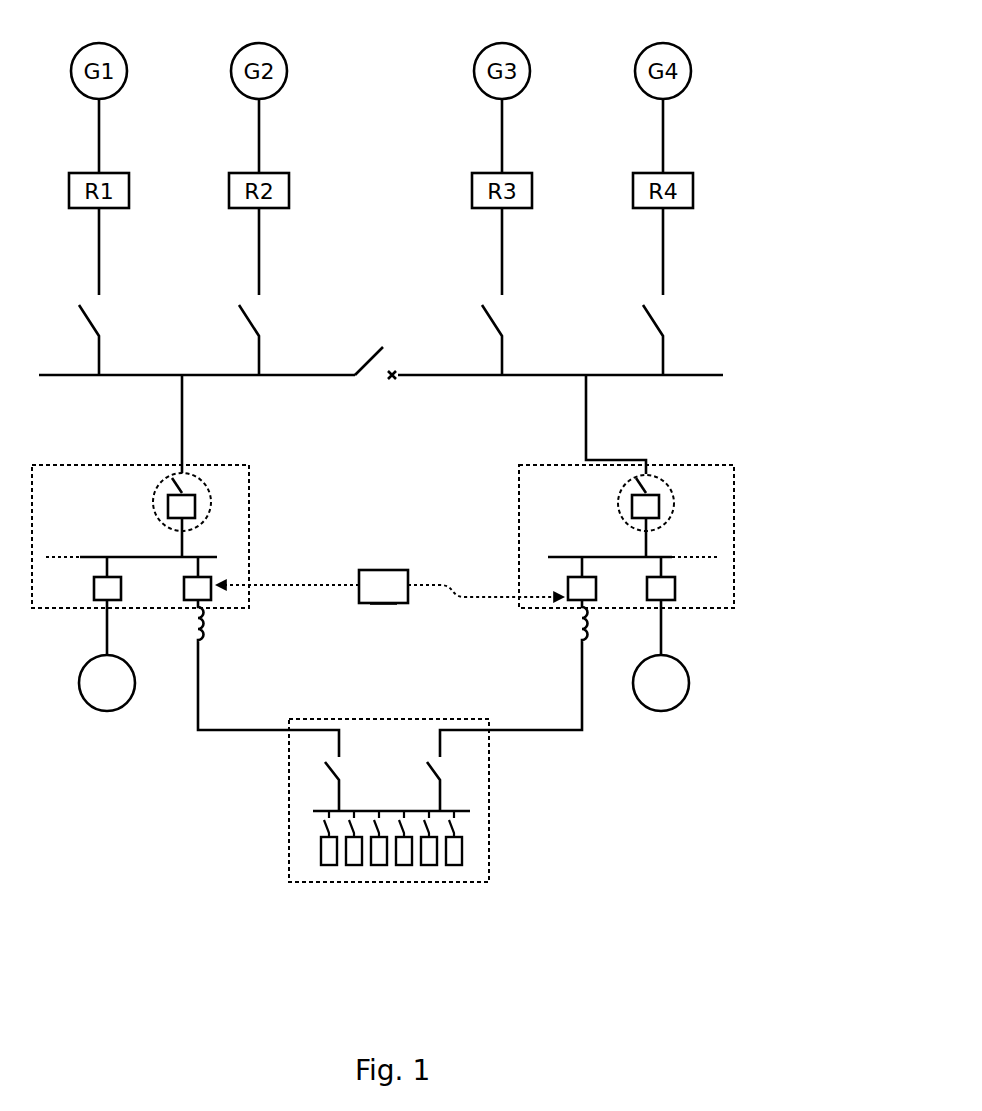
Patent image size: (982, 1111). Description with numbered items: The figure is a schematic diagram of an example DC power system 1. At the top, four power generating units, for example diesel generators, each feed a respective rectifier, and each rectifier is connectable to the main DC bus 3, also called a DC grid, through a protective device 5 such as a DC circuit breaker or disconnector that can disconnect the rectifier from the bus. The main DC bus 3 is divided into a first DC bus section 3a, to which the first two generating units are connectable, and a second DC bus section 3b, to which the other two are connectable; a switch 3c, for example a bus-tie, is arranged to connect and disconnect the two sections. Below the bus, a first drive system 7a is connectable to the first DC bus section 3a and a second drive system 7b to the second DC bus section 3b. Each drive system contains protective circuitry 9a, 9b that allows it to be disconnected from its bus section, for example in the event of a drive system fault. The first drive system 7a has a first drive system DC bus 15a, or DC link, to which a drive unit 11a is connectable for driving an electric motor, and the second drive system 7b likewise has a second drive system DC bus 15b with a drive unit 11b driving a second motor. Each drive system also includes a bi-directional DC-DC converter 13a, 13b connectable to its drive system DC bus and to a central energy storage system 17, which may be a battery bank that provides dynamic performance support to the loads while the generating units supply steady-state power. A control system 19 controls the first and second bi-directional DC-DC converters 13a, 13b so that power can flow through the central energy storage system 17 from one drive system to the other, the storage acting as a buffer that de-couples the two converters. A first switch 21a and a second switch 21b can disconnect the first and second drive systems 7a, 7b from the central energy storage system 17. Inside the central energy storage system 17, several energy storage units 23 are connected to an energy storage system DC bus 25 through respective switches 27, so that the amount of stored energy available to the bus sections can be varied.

The DC power system 1 is at (735, 52).
The main DC bus 3 is at (381, 320).
The first DC bus section 3a is at (229, 387).
The second DC bus section 3b is at (557, 366).
The switch 3c is at (373, 338).
The protective devices 5 is at (113, 306).
The first drive system 7a is at (177, 566).
The second drive system 7b is at (612, 566).
The protective circuitry 9a is at (213, 500).
The protective circuitry 9b is at (676, 500).
The drive unit 11a is at (103, 592).
The drive unit 11b is at (670, 595).
The first bi-directional DC-DC converter 13a is at (202, 592).
The second bi-directional DC-DC converter 13b is at (572, 600).
The first drive system DC bus 15a is at (128, 555).
The second drive system DC bus 15b is at (668, 557).
The central energy storage system 17 is at (391, 836).
The control system 19 is at (390, 588).
The first switch 21a is at (326, 768).
The second switch 21b is at (440, 766).
The energy storage units 23 is at (396, 895).
The energy storage system DC bus 25 is at (466, 807).
The switches 27 is at (312, 822).